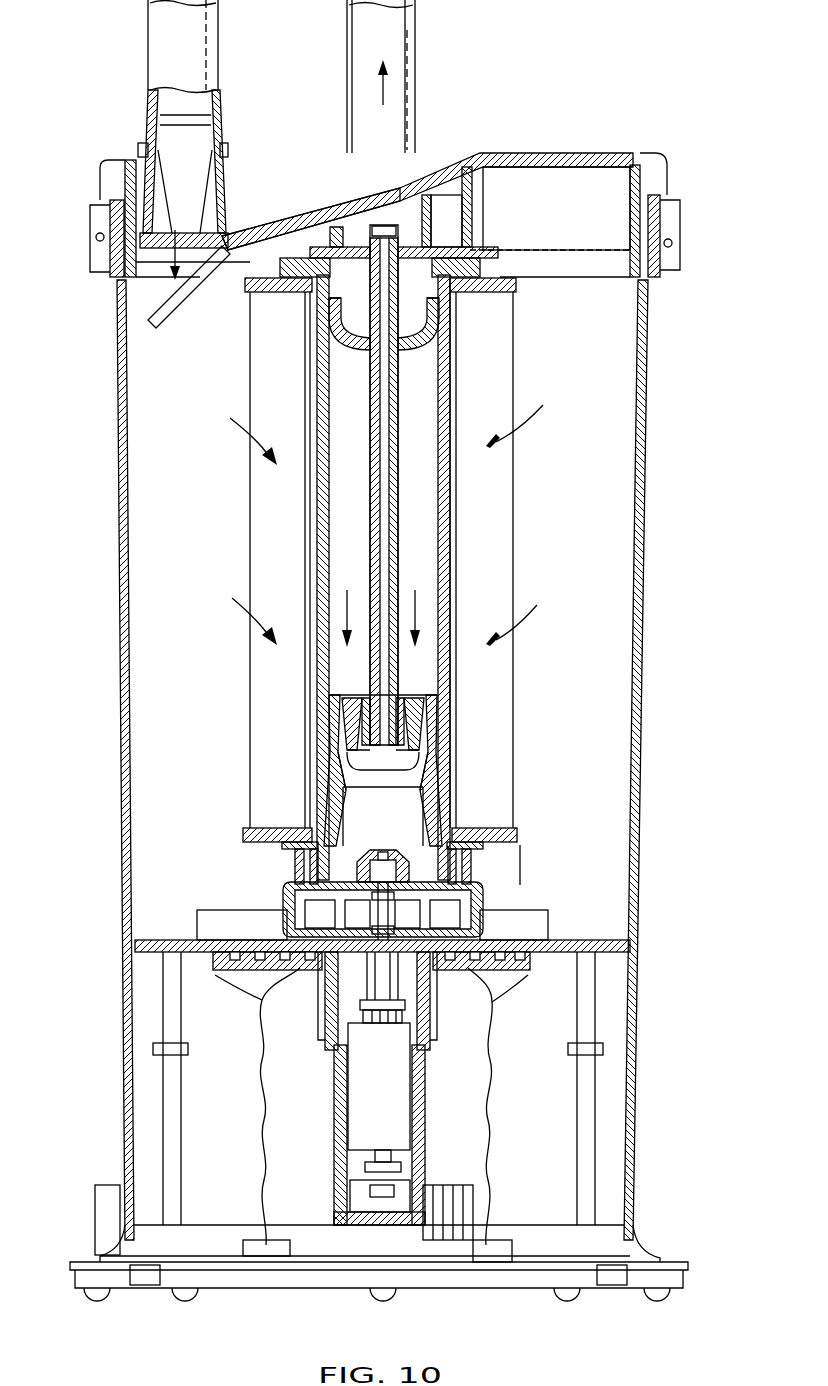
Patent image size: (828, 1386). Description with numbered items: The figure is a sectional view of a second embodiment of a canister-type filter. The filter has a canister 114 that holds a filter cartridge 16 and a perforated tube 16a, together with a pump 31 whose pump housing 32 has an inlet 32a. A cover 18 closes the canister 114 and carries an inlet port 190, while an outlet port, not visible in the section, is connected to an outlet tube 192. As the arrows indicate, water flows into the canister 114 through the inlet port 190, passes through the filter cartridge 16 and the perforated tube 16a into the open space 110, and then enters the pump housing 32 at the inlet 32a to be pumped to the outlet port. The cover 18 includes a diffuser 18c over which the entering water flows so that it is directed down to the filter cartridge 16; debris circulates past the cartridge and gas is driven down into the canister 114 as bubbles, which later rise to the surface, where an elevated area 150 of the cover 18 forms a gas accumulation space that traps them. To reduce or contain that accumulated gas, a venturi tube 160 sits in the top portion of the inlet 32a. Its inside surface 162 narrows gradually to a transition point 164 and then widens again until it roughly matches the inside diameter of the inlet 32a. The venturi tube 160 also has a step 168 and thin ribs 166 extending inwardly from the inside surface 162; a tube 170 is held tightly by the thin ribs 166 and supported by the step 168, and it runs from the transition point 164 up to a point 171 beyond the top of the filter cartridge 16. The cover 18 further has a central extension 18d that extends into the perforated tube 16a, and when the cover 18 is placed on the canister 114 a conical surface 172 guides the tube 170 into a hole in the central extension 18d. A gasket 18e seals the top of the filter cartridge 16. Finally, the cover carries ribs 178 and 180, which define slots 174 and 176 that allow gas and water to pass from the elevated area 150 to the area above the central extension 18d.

The filter cartridge 16 is at (515, 492).
The perforated tube 16a is at (447, 568).
The cover 18 is at (665, 173).
The diffuser 18c is at (173, 300).
The central extension 18d is at (350, 338).
The gasket 18e is at (483, 270).
The pump 31 is at (497, 858).
The pump housing 32 is at (480, 900).
The inlet 32a is at (407, 812).
The open space 110 is at (423, 378).
The canister 114 is at (643, 377).
The elevated area 150 is at (592, 193).
The venturi tube 160 is at (328, 718).
The inside surface 162 is at (335, 700).
The transition point 164 is at (342, 770).
The thin ribs 166 is at (367, 728).
The step 168 is at (430, 757).
The tube 170 is at (370, 523).
The point beyond the top of filter cartridge 171 is at (382, 237).
The conical surface 172 is at (360, 345).
The slot 174 is at (433, 187).
The slot 176 is at (472, 190).
The rib 178 is at (432, 230).
The rib 180 is at (470, 227).
The inlet port 190 is at (182, 165).
The outlet tube 192 is at (347, 38).